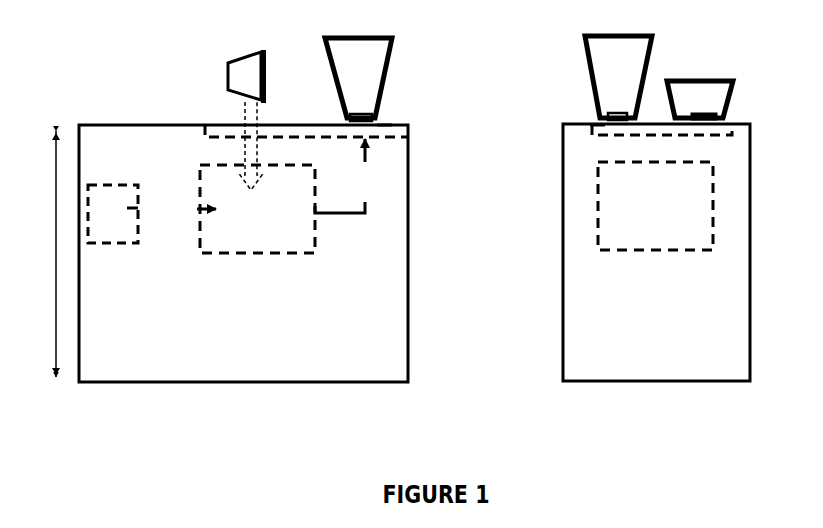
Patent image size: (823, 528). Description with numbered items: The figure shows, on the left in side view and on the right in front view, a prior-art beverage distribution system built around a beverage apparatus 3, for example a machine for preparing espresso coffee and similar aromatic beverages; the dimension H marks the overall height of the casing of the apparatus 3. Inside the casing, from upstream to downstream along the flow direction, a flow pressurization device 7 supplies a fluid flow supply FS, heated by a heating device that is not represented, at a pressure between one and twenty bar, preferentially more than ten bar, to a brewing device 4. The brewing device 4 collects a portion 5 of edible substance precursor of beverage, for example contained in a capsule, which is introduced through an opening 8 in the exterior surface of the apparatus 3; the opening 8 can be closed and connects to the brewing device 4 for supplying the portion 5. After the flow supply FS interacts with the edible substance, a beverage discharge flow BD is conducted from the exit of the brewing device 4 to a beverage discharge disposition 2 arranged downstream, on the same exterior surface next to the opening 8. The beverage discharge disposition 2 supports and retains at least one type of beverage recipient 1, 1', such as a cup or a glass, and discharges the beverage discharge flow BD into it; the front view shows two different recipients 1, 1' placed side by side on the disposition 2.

The beverage recipient 1 is at (488, 67).
The beverage recipient 1' is at (700, 85).
The beverage discharge disposition 2 is at (384, 123).
The beverage apparatus 3 is at (414, 227).
The brewing device 4 is at (456, 207).
The portion of edible substance 5 is at (247, 109).
The flow pressurization device 7 is at (116, 199).
The opening 8 is at (468, 115).
The height H is at (40, 254).
The beverage discharge flow BD is at (350, 176).
The flow supply FS is at (181, 211).